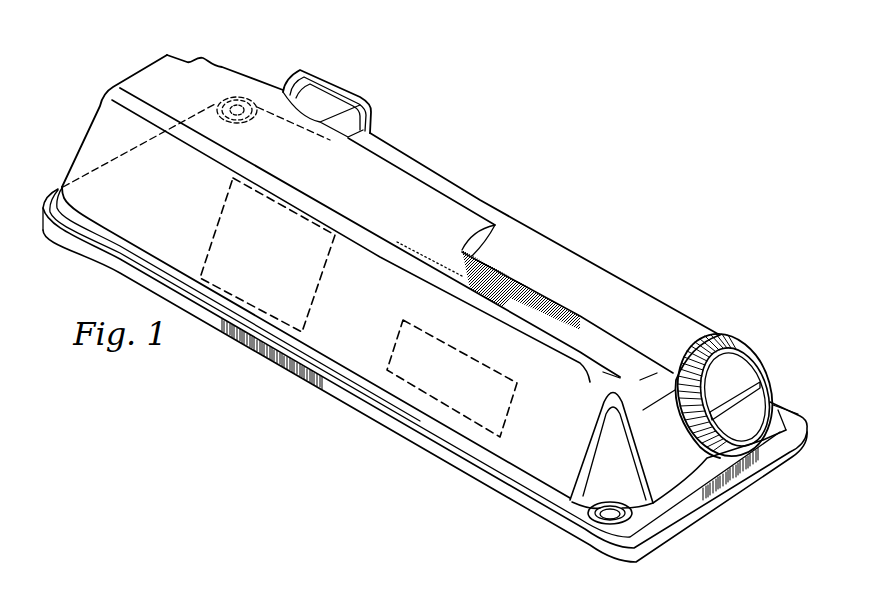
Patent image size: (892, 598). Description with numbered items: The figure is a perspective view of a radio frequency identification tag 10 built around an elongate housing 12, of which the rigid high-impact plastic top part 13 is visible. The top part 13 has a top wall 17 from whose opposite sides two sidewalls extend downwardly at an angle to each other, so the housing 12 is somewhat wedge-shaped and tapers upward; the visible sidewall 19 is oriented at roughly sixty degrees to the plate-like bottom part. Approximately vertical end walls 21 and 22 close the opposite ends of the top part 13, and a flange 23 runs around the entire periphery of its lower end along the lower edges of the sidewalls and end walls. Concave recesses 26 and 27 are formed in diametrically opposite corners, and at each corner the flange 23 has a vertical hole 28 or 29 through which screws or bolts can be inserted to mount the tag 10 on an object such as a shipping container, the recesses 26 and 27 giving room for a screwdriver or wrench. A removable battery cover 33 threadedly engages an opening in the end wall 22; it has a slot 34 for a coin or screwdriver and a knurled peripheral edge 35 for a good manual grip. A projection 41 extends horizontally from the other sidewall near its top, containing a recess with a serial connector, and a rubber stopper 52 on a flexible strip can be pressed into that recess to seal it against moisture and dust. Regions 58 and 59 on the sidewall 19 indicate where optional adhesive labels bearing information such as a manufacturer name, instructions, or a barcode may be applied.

The radio frequency identification (RFID) tag 10 is at (518, 151).
The housing 12 is at (570, 246).
The top part 13 is at (645, 306).
The top wall 17 is at (367, 195).
The sidewall 19 is at (363, 362).
The end wall 21 is at (92, 122).
The end wall 22 is at (667, 477).
The flange 23 is at (428, 446).
The concave recess 26 is at (214, 65).
The concave recess 27 is at (607, 432).
The vertical hole 28 is at (222, 100).
The vertical hole 29 is at (612, 505).
The battery cover 33 is at (757, 372).
The slot 34 is at (738, 403).
The knurled peripheral edge 35 is at (733, 340).
The projection 41 is at (336, 98).
The rubber stopper 52 is at (328, 78).
The label region 58 is at (214, 232).
The label region 59 is at (394, 345).